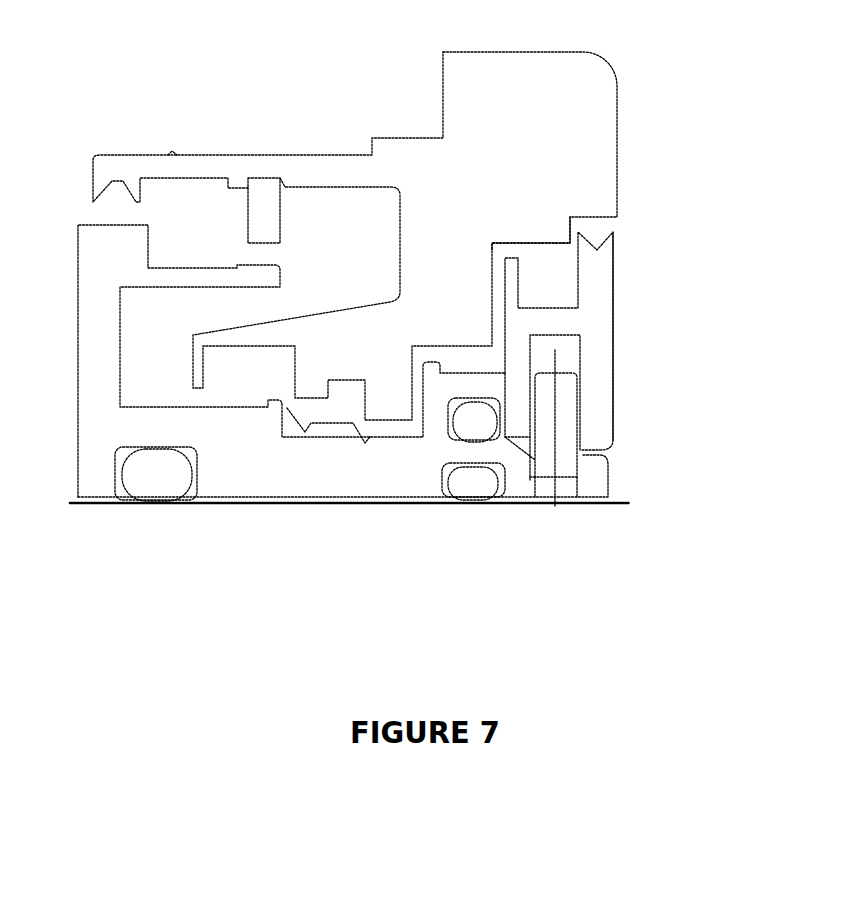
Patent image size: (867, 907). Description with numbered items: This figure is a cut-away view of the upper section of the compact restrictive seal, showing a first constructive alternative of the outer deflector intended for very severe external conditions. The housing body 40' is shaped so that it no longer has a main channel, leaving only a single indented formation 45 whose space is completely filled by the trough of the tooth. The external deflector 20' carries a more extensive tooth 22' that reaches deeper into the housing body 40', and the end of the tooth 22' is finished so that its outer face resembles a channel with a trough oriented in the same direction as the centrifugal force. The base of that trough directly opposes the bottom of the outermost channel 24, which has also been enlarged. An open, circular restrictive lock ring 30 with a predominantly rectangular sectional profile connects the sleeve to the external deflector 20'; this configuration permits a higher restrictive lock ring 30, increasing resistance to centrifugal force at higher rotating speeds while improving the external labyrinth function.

The housing body 40' is at (411, 210).
The step notch 45 is at (493, 240).
The tooth 22' is at (599, 336).
The outermost channel 24 is at (563, 355).
The external deflector 20' is at (401, 361).
The restrictive lock ring 30 is at (545, 460).